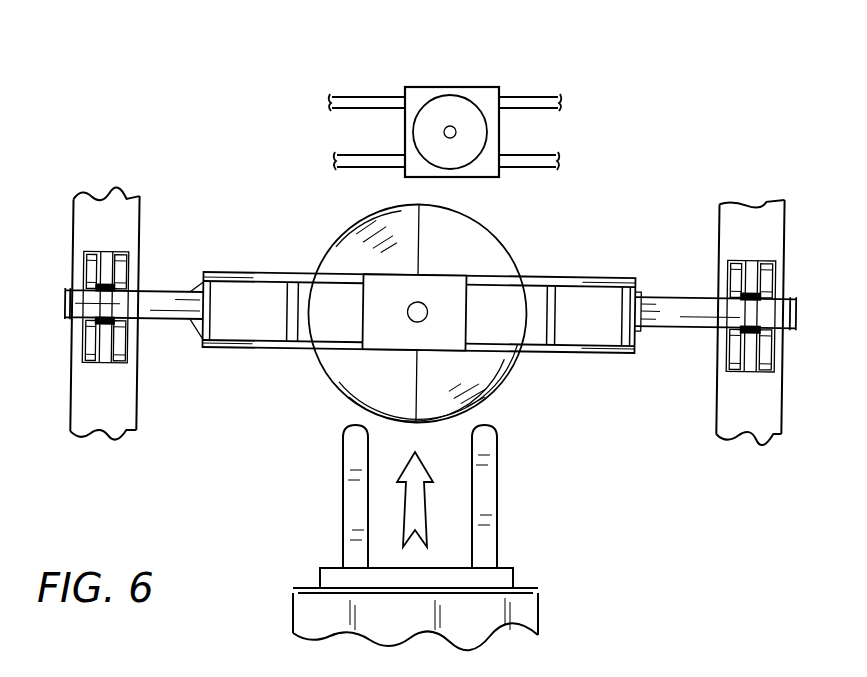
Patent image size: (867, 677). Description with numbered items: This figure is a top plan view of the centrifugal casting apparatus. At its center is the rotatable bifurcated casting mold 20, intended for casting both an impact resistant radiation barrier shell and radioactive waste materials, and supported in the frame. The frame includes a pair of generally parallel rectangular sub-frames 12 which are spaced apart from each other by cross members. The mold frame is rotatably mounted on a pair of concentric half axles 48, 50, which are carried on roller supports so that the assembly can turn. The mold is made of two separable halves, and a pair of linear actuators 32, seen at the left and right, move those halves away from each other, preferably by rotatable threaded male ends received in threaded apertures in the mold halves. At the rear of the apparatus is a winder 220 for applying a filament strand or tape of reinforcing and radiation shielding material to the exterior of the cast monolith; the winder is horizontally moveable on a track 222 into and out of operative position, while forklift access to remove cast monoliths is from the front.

The winder 220 is at (472, 76).
The track 222 is at (542, 97).
The linear actuators 32 is at (109, 176).
The half axle 48 is at (168, 322).
The half axle 50 is at (678, 298).
The rotatable bifurcated casting mold 20 is at (330, 250).
The rectangular sub-frames 12 is at (577, 330).